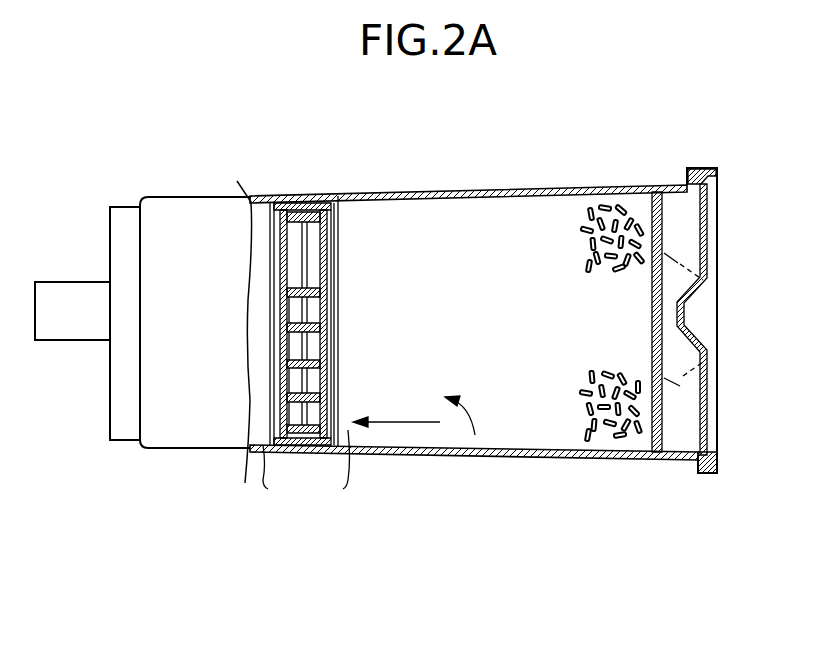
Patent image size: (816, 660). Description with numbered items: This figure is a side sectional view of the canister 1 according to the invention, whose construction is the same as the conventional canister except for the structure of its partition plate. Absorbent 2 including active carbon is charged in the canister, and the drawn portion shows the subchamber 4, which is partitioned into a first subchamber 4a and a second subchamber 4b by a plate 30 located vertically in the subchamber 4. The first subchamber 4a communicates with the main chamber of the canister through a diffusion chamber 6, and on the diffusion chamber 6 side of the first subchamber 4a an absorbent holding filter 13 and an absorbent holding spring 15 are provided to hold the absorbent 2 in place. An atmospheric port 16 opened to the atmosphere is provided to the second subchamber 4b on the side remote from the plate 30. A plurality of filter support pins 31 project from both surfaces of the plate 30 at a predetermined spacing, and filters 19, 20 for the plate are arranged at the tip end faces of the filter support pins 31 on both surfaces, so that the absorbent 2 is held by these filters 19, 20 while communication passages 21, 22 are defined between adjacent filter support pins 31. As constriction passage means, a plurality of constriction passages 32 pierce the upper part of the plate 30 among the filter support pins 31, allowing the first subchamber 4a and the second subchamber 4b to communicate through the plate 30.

The canister 1 is at (440, 182).
The absorbent 2 is at (613, 196).
The subchamber 4 is at (298, 385).
The first subchamber 4a is at (337, 474).
The second subchamber 4b is at (278, 482).
The diffusion chamber 6 is at (680, 236).
The absorbent holding filter 13 is at (652, 325).
The absorbent holding spring 15 is at (717, 392).
The atmospheric port 16 is at (75, 324).
The filter for the plate 19 is at (325, 245).
The filter for the plate 20 is at (280, 238).
The communication passage 21 is at (313, 345).
The communication passage 22 is at (290, 352).
The plate 30 is at (283, 313).
The filter support pins 31 is at (292, 398).
The constriction passages 32 is at (308, 217).